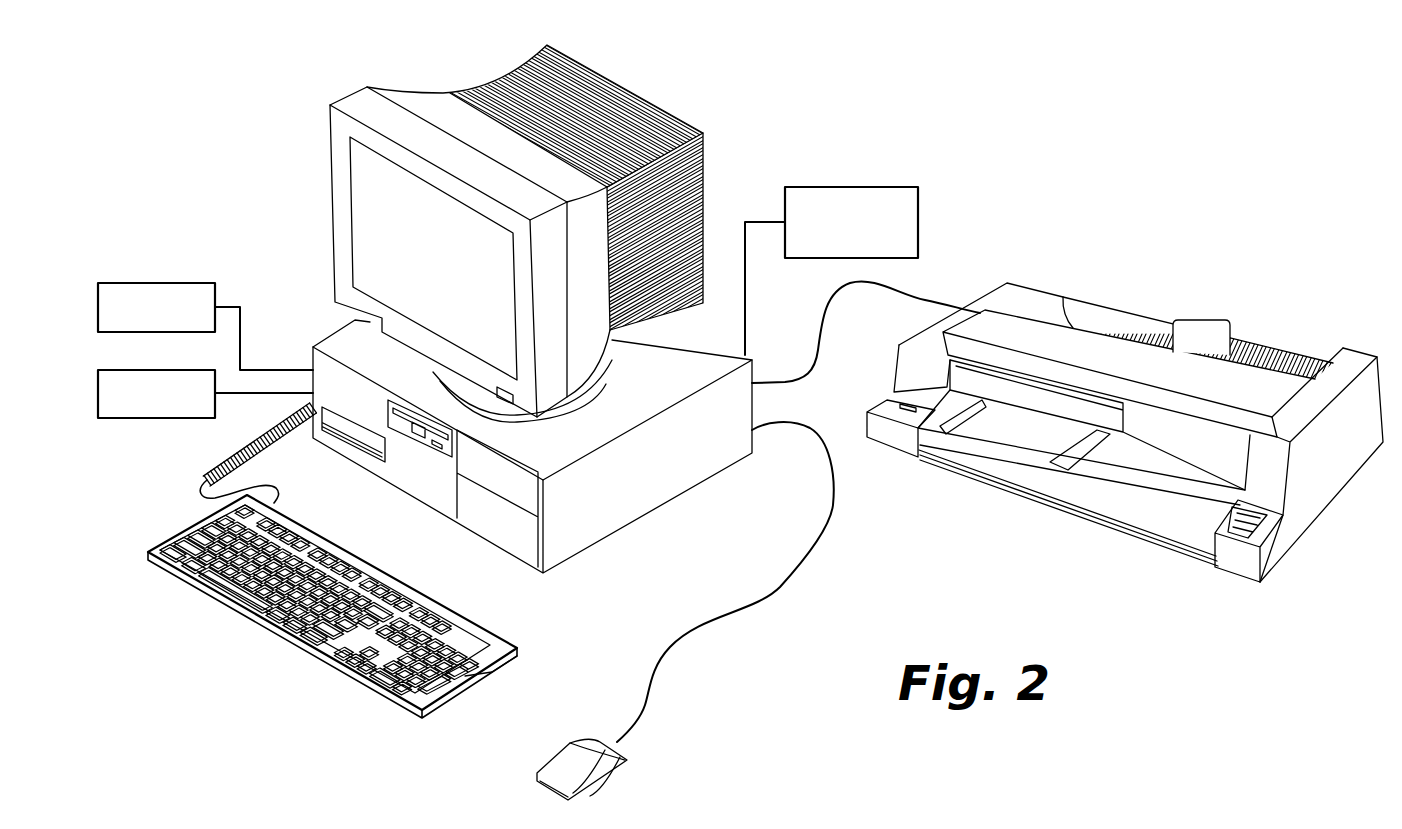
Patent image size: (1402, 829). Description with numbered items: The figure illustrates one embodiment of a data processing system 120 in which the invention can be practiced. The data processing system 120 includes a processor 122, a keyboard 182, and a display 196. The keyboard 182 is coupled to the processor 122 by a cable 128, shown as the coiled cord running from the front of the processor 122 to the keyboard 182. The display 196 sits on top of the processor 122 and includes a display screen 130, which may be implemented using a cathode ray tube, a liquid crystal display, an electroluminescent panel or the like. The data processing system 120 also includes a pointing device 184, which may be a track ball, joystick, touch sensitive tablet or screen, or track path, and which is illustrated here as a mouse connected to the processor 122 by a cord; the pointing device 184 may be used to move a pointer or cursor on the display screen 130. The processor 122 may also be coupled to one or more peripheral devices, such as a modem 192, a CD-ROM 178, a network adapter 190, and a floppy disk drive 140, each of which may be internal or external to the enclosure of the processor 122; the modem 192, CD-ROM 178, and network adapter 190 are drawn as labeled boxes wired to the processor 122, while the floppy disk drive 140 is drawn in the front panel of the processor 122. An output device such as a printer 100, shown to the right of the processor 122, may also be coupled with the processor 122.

The data processing system 120 is at (914, 88).
The display 196 is at (472, 211).
The display screen 130 is at (470, 268).
The processor 122 is at (532, 464).
The floppy disk drive 140 is at (415, 432).
The modem 192 is at (148, 283).
The CD-ROM 178 is at (148, 370).
The network adapter 190 is at (918, 200).
The cable 128 is at (228, 448).
The keyboard 182 is at (302, 653).
The pointing device 184 is at (618, 773).
The printer 100 is at (1064, 262).